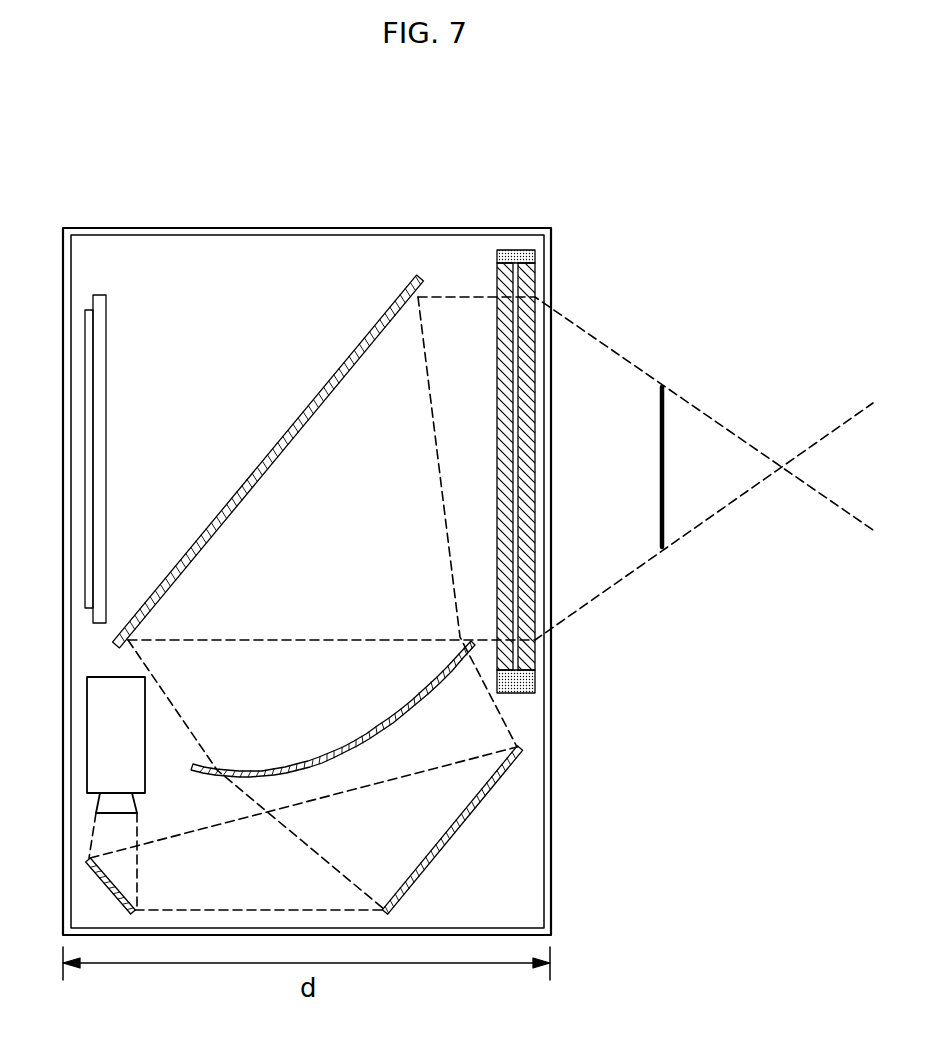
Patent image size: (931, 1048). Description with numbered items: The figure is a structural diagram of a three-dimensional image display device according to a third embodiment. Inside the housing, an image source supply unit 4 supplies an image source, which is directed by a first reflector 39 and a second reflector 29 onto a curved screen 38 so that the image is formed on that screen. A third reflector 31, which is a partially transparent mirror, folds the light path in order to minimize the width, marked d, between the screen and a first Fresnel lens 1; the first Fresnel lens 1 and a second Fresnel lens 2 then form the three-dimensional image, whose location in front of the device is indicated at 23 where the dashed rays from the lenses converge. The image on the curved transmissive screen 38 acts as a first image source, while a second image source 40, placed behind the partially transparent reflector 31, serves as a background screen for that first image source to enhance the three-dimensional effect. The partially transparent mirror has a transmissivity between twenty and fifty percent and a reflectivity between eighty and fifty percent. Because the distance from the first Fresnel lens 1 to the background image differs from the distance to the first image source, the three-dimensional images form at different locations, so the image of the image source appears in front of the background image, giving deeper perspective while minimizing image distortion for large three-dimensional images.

The first Fresnel lens 1 is at (497, 348).
The second Fresnel lens 2 is at (528, 366).
The image source supply unit 4 is at (87, 723).
The viewing plane / image 23 is at (665, 390).
The second reflector 29 is at (455, 828).
The third reflector 31 is at (318, 396).
The curved screen 38 is at (360, 740).
The first reflector 39 is at (100, 878).
The second image source 40 is at (88, 433).